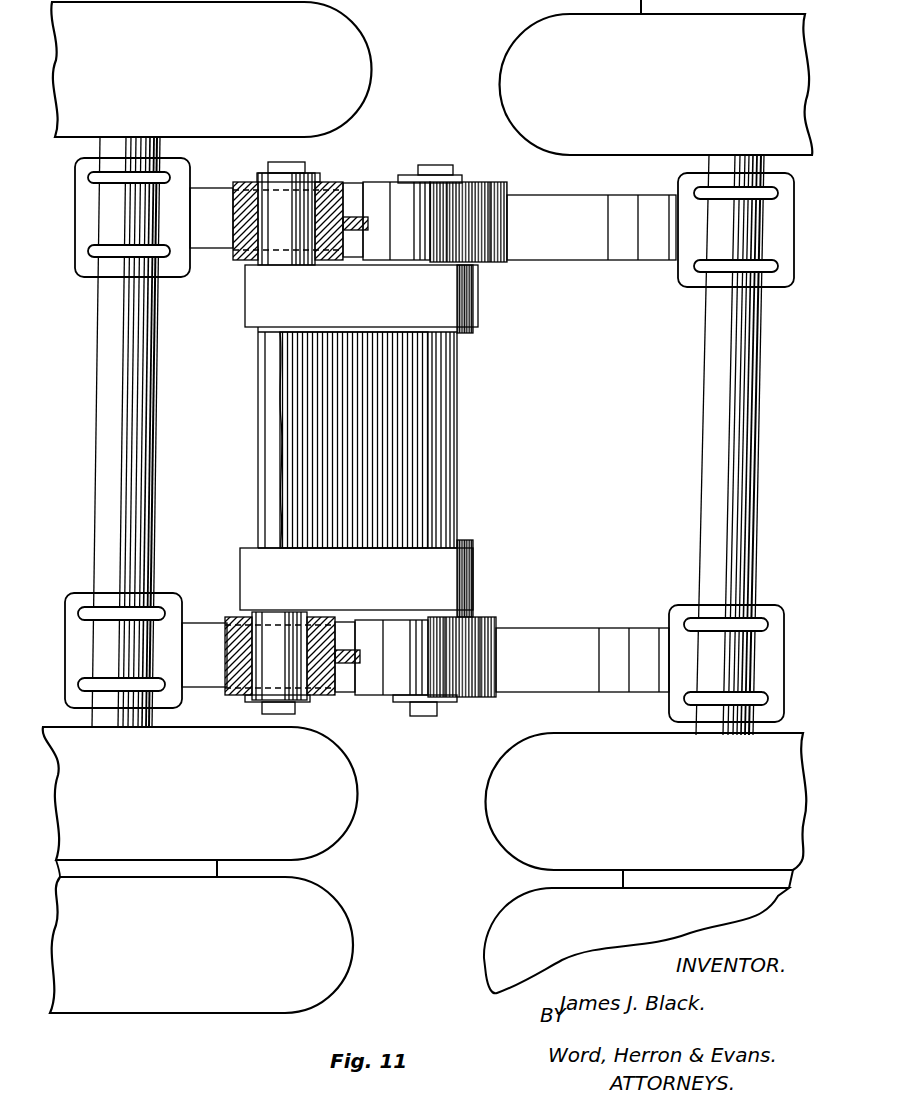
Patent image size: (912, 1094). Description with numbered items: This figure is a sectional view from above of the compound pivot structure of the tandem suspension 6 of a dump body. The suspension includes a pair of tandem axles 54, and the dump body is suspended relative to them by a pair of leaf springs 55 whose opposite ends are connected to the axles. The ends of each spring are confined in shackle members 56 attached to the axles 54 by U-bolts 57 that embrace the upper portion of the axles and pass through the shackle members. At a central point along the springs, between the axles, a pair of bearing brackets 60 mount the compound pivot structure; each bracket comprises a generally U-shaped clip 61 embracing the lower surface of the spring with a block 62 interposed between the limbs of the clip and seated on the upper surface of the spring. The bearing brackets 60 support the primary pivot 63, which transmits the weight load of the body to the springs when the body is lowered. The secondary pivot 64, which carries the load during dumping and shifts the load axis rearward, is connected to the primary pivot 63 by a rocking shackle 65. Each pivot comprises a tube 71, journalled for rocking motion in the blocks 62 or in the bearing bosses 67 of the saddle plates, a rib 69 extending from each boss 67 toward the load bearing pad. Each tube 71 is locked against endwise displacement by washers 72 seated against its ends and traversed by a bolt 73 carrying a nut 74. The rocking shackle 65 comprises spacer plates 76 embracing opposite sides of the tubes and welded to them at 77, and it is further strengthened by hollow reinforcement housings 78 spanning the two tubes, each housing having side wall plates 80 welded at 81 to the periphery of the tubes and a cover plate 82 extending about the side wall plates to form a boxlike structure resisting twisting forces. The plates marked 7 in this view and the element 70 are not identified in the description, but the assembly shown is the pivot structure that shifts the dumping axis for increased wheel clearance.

The tandem suspension 6 is at (410, 745).
The plate 7 is at (346, 47).
The tandem axles 54 is at (135, 519).
The leaf springs 55 is at (620, 244).
The shackle members 56 is at (80, 262).
The U-bolts 57 is at (95, 179).
The bearing brackets 60 is at (482, 184).
The U-shaped clip 61 is at (498, 184).
The block 62 is at (492, 220).
The primary pivot 63 is at (440, 162).
The secondary pivot 64 is at (289, 158).
The rocking shackle 65 is at (410, 482).
The bearing boss 67 is at (248, 188).
The rib 69 is at (355, 216).
The hub 70 is at (430, 224).
The tube 71 is at (266, 486).
The washers 72 is at (264, 172).
The bolt 73 is at (432, 165).
The nut 74 is at (430, 716).
The spacer plates 76 is at (296, 432).
The weld 77 is at (278, 453).
The hollow reinforcement housings 78 is at (268, 290).
The side wall plates 80 is at (348, 332).
The weld 81 is at (257, 328).
The cover plate 82 is at (472, 314).